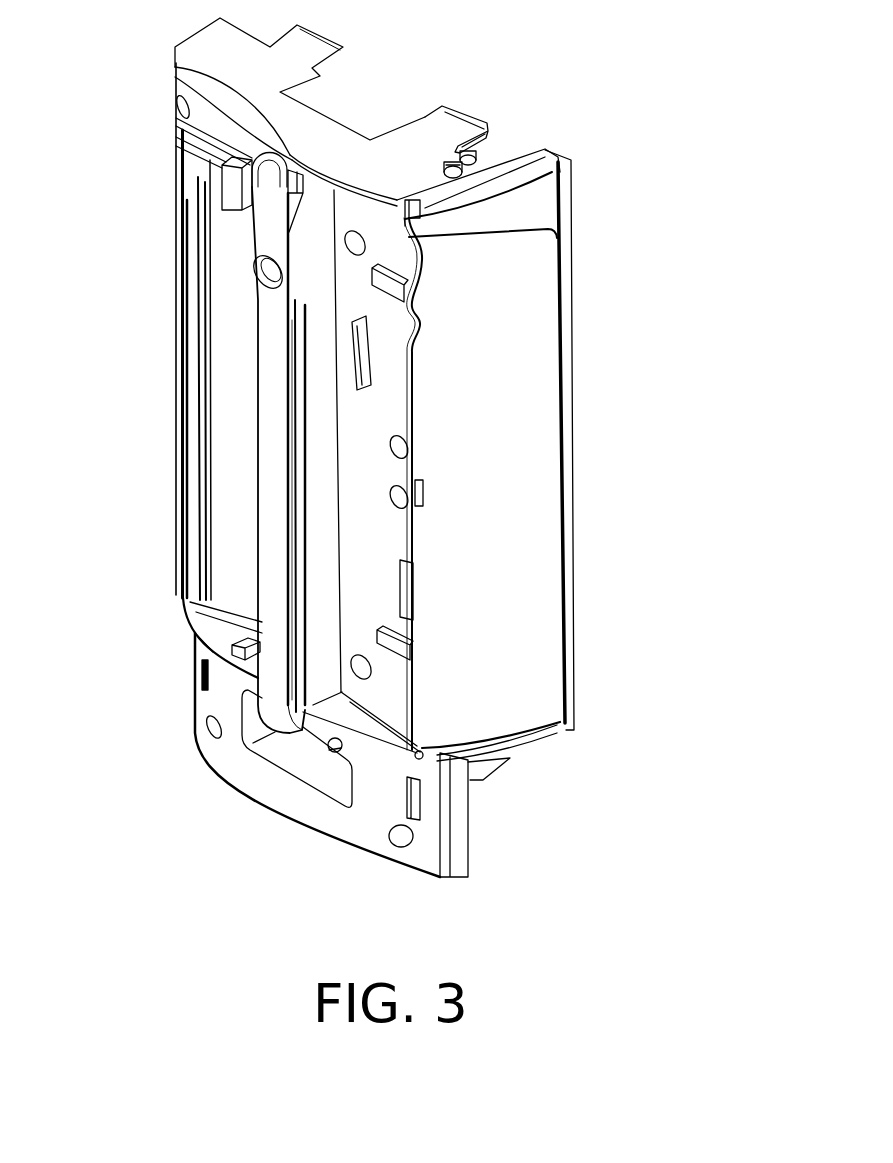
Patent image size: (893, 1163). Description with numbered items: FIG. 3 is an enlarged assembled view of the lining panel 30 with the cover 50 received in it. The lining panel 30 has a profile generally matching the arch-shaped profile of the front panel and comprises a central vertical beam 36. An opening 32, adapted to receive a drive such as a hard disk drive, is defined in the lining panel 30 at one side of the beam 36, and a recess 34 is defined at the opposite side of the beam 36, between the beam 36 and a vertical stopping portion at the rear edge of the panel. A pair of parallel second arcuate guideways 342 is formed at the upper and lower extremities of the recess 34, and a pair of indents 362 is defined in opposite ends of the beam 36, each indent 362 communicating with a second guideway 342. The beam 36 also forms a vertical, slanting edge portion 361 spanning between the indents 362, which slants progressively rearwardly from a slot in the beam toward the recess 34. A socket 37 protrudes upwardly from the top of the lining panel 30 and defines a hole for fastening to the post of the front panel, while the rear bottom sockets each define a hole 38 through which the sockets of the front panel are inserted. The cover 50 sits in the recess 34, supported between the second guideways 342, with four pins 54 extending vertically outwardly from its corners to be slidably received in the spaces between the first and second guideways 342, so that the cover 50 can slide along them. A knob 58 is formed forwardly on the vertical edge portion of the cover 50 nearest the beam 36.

The lining panel 30 is at (145, 190).
The opening 32 is at (235, 290).
The recess 34 is at (383, 237).
The second arcuate guideway 342 is at (370, 733).
The central vertical beam 36 is at (270, 447).
The edge portion 361 is at (300, 503).
The indent 362 is at (283, 158).
The socket 37 is at (470, 153).
The hole 38 is at (401, 838).
The cover 50 is at (530, 417).
The pin 54 is at (420, 757).
The knob 58 is at (420, 492).